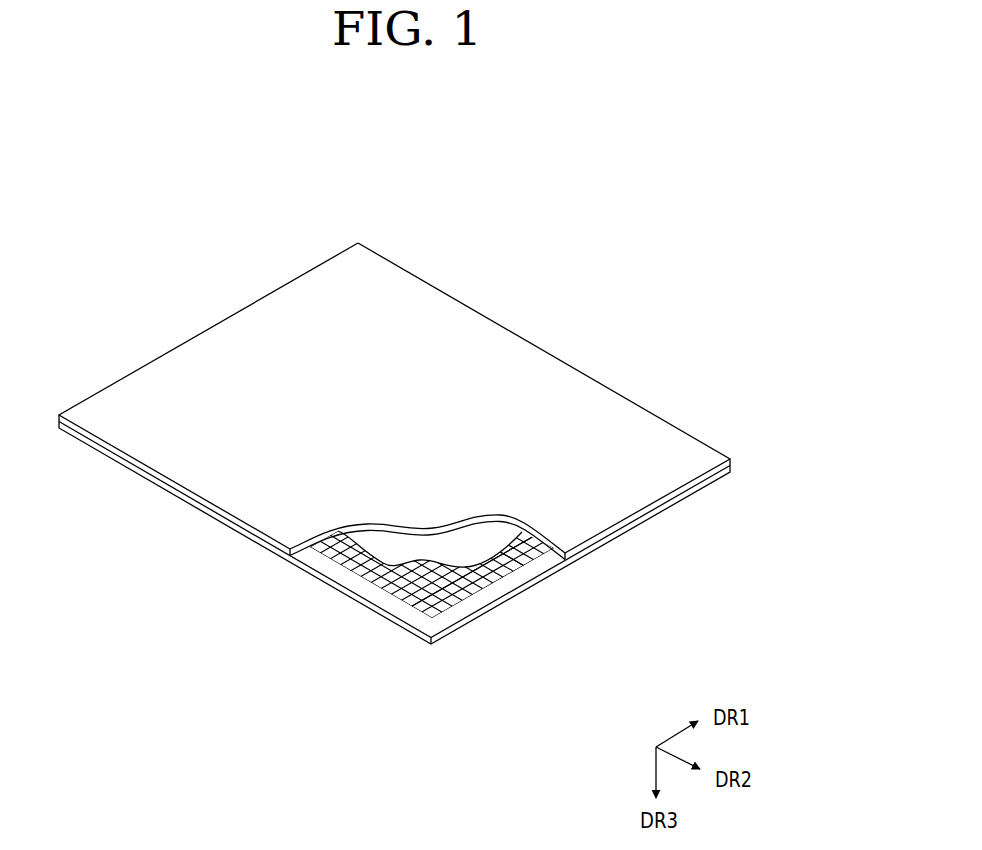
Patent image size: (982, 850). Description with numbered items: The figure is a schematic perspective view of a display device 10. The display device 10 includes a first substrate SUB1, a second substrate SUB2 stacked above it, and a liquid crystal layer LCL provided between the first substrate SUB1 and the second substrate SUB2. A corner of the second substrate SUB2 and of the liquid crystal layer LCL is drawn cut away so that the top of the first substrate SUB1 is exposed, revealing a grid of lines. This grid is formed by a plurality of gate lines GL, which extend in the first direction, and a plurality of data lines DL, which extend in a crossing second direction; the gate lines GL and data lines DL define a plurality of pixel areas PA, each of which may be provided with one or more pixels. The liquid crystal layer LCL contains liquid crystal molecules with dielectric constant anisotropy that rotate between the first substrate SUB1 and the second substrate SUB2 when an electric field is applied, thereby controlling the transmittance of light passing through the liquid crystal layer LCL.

The display device 10 is at (572, 280).
The first substrate SUB1 is at (732, 468).
The second substrate SUB2 is at (732, 460).
The liquid crystal layer LCL is at (478, 540).
The pixel area PA is at (383, 577).
The gate line GL is at (445, 598).
The data line DL is at (425, 605).